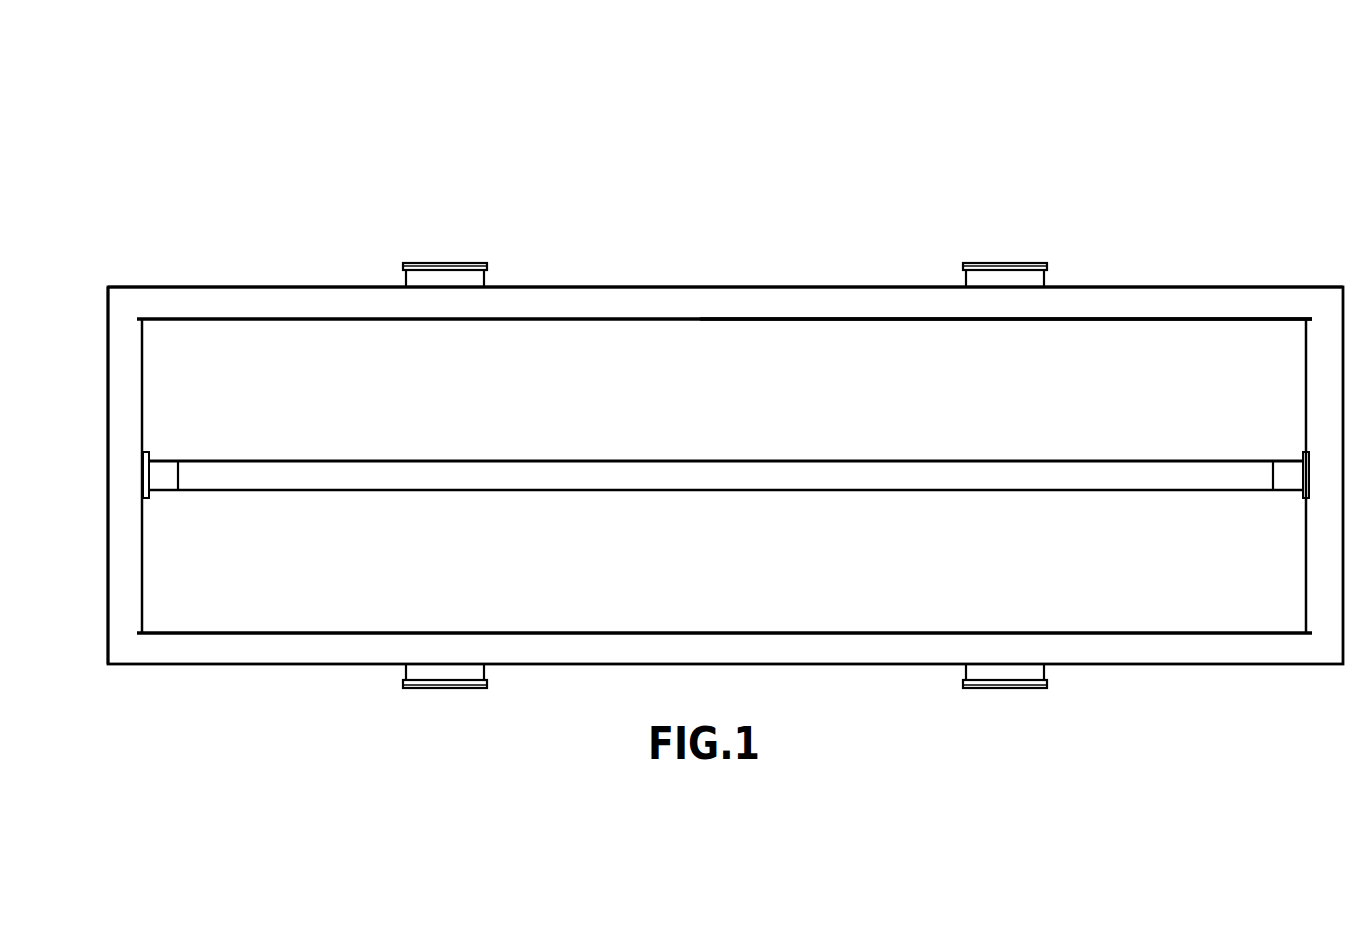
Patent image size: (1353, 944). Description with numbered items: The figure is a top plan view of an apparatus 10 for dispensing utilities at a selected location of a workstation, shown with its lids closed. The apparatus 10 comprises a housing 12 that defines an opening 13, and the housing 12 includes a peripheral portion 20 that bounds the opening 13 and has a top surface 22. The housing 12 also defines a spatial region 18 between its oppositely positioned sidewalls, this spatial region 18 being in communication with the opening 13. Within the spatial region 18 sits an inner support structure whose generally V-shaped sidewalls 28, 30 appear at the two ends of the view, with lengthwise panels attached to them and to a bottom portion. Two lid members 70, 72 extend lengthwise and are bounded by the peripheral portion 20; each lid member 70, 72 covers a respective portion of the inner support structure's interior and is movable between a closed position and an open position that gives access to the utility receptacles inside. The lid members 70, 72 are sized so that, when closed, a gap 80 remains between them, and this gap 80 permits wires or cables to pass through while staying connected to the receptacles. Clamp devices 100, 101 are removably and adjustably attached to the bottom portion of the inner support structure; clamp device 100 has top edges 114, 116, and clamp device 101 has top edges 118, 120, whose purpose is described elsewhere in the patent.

The apparatus 10 is at (146, 162).
The housing 12 is at (688, 287).
The opening 13 is at (1100, 318).
The spatial region 18 is at (1303, 486).
The peripheral portion 20 is at (182, 300).
The top surface 22 is at (853, 302).
The sidewall 28 is at (178, 479).
The sidewall 30 is at (1270, 478).
The lid member 70 is at (198, 604).
The lid member 72 is at (300, 372).
The gap 80 is at (682, 480).
The clamp device 100 is at (487, 279).
The clamp device 101 is at (963, 280).
The top edge 114 is at (457, 690).
The top edge 116 is at (462, 263).
The top edge 118 is at (1027, 690).
The top edge 120 is at (1008, 262).